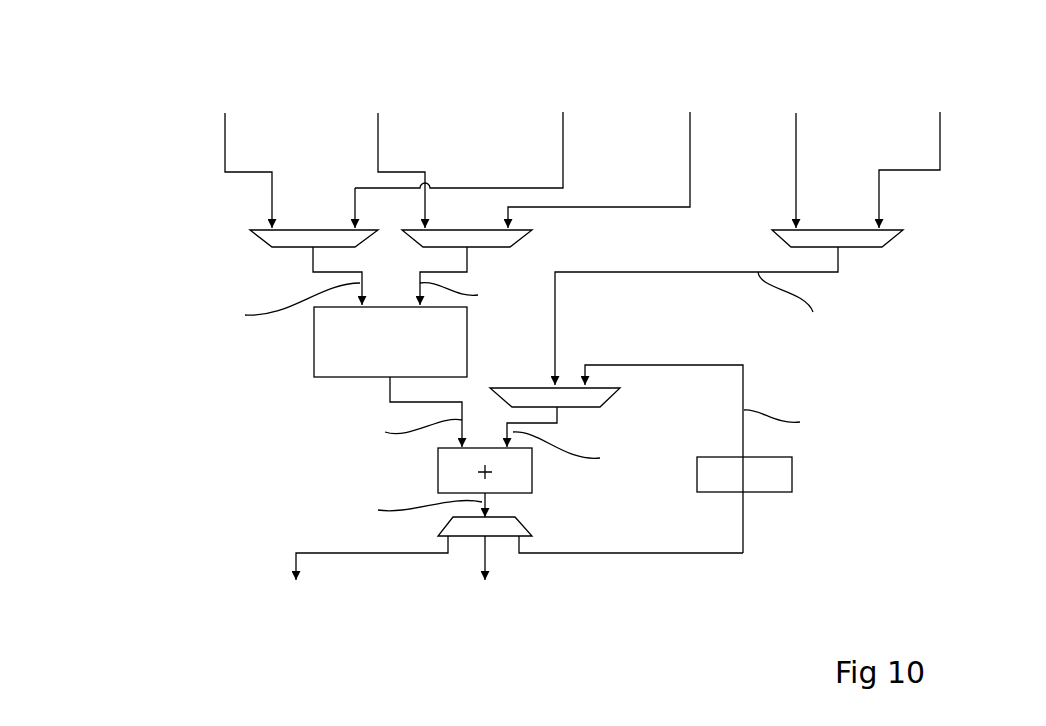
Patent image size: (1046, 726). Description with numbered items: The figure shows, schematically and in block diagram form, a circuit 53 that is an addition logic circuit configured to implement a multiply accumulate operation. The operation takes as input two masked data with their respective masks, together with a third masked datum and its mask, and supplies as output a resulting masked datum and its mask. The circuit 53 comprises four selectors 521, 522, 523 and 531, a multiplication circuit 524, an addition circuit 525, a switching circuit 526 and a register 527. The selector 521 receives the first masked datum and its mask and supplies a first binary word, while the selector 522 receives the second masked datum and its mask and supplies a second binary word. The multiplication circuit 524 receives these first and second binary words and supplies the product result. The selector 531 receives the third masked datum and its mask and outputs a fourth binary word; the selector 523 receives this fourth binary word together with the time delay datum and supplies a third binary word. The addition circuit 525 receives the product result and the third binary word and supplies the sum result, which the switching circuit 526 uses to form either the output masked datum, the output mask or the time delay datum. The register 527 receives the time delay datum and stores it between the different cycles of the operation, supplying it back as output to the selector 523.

The circuit 53 is at (130, 166).
The selector 521 is at (270, 238).
The selector 522 is at (500, 238).
The selector 523 is at (593, 397).
The multiplication circuit 524 is at (330, 348).
The addition circuit 525 is at (450, 473).
The switching circuit 526 is at (507, 527).
The register 527 is at (792, 470).
The selector 531 is at (863, 240).